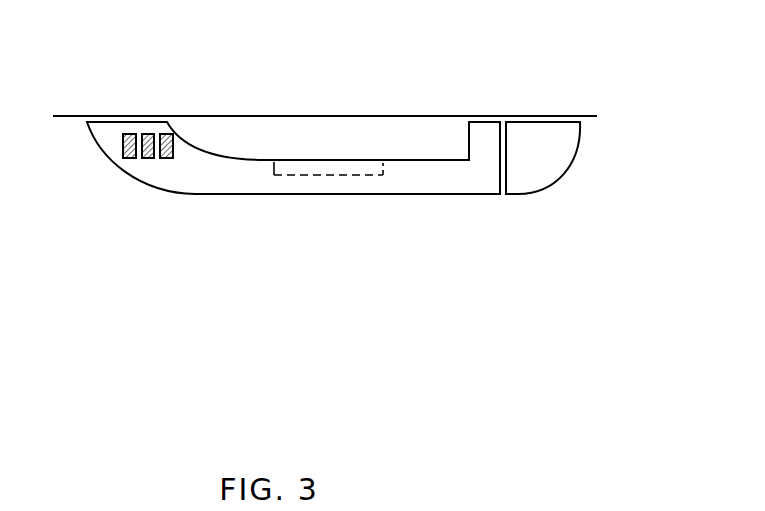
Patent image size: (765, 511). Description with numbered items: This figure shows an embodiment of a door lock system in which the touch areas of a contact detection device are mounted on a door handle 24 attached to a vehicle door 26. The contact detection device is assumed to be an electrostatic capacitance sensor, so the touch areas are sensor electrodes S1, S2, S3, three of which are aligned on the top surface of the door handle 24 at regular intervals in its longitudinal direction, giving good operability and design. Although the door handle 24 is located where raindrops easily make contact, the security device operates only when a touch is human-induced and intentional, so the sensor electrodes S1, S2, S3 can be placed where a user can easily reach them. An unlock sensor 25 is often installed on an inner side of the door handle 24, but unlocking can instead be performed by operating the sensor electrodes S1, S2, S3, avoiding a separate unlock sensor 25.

The door handle 24 is at (428, 195).
The unlock sensor 25 is at (330, 160).
The vehicle door 26 is at (433, 115).
The sensor electrode S1 is at (128, 133).
The sensor electrode S2 is at (147, 133).
The sensor electrode S3 is at (167, 133).